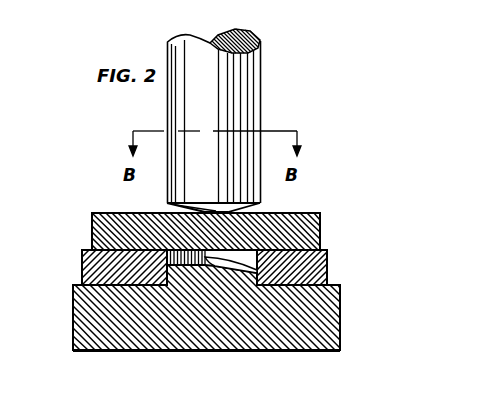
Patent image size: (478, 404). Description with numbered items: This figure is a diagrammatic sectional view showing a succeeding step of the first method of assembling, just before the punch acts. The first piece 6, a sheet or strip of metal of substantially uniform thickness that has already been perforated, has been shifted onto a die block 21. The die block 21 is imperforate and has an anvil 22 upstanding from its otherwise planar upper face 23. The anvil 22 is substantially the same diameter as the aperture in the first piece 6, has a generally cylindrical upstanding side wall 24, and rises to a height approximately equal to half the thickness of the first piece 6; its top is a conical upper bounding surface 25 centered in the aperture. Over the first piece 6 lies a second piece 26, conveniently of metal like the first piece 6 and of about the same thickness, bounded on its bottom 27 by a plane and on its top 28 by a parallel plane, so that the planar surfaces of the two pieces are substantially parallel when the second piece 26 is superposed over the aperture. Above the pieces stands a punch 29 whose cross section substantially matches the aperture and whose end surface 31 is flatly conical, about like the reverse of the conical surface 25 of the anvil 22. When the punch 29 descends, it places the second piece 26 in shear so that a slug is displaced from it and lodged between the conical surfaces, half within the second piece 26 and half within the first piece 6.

The first piece 6 is at (82, 261).
The die block 21 is at (305, 352).
The anvil 22 is at (320, 248).
The upper face 23 is at (335, 284).
The side wall 24 is at (228, 251).
The conical upper bounding surface 25 is at (256, 268).
The second piece 26 is at (99, 226).
The bottom 27 is at (92, 238).
The top 28 is at (111, 213).
The punch 29 is at (213, 108).
The end surface 31 is at (257, 207).